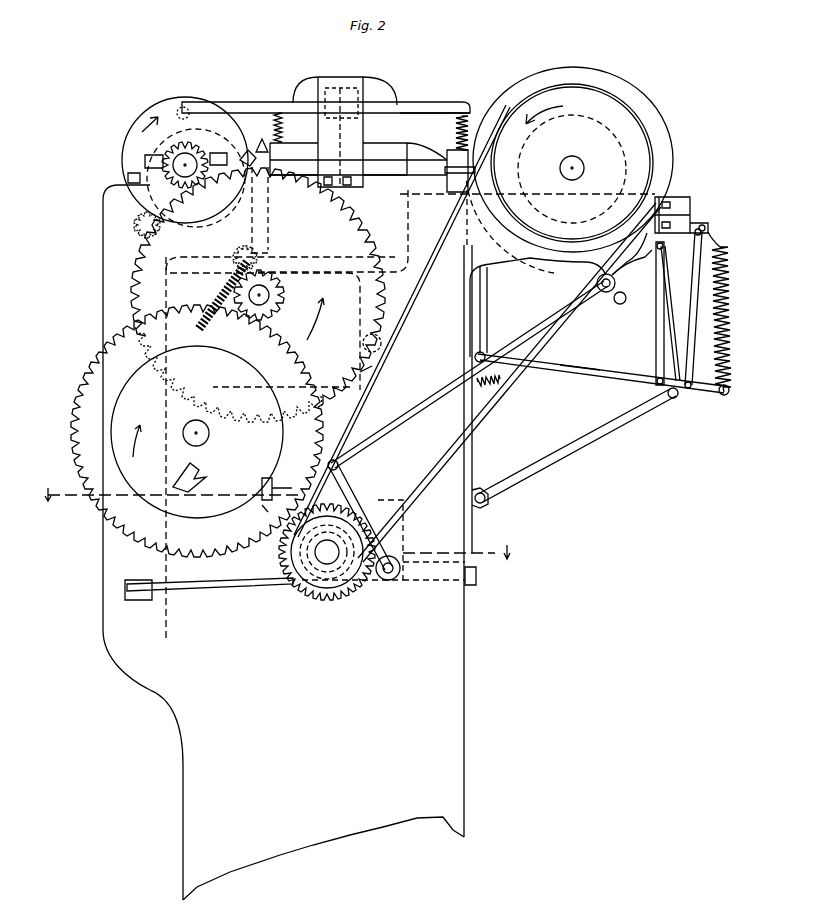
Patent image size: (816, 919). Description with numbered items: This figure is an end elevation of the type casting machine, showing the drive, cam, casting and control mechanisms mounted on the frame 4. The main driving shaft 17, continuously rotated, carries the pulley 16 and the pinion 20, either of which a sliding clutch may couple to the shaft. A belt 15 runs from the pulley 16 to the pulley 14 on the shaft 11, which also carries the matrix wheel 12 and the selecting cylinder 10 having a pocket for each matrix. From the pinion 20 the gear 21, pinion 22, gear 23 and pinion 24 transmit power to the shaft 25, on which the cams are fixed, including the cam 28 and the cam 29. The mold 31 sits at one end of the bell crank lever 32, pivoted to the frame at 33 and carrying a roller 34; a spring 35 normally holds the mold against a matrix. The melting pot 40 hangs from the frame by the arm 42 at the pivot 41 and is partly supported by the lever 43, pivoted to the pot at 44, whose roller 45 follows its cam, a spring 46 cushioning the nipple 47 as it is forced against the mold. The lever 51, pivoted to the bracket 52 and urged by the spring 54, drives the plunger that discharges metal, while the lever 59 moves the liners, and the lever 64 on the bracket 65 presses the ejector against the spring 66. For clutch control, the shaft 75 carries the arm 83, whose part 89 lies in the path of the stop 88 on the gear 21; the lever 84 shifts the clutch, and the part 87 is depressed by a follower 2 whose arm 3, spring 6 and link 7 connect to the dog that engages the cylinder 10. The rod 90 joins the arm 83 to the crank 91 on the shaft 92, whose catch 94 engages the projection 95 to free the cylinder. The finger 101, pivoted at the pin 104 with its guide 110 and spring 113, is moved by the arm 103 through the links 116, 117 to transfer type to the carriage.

The follower 2 is at (474, 530).
The arm 3 is at (607, 430).
The frame 4 is at (676, 207).
The spring 6 is at (723, 290).
The second link 7 is at (667, 292).
The selecting cylinder 10 is at (627, 172).
The shaft 11 is at (578, 170).
The matrix wheel 12 is at (633, 100).
The pulley 14 is at (637, 153).
The belt 15 is at (349, 427).
The pulley 16 is at (296, 570).
The shaft 17 is at (330, 555).
The pinion 20 is at (322, 600).
The gear 21 is at (197, 431).
The pinion 22 is at (274, 302).
The gear 23 is at (258, 295).
The pinion 24 is at (147, 166).
The shaft 25 is at (183, 163).
The cam 28 is at (170, 127).
The cam 29 is at (163, 103).
The mold 31 is at (468, 162).
The bell crank lever 32 is at (372, 372).
The pivot 33 is at (459, 392).
The roller 34 is at (142, 223).
The spring 35 is at (228, 276).
The melting pot 40 is at (358, 132).
The pivot 41 is at (366, 343).
The arm 42 is at (360, 308).
The lever 43 is at (262, 228).
The pivot 44 is at (244, 256).
The roller 45 is at (248, 152).
The spring 46 is at (262, 150).
The nipple 47 is at (447, 160).
The lever 51 is at (247, 108).
The bracket 52 is at (392, 93).
The spring 54 is at (274, 127).
The lever 59 is at (358, 167).
The lever 64 is at (425, 109).
The bracket 65 is at (300, 96).
The spring 66 is at (457, 133).
The shaft 75 is at (400, 560).
The arm 83 is at (346, 490).
The lever 84 is at (255, 583).
The part 87 is at (477, 580).
The stop 88 is at (275, 470).
The part 89 is at (262, 505).
The rod 90 is at (390, 436).
The crank 91 is at (626, 299).
The shaft 92 is at (597, 283).
The catch 94 is at (640, 275).
The projection 95 is at (633, 280).
The finger 101 is at (486, 318).
The arm 103 is at (601, 372).
The pin 104 is at (485, 352).
The guide 110 is at (496, 386).
The spring 113 is at (560, 368).
The link 116 is at (692, 337).
The link 117 is at (656, 333).